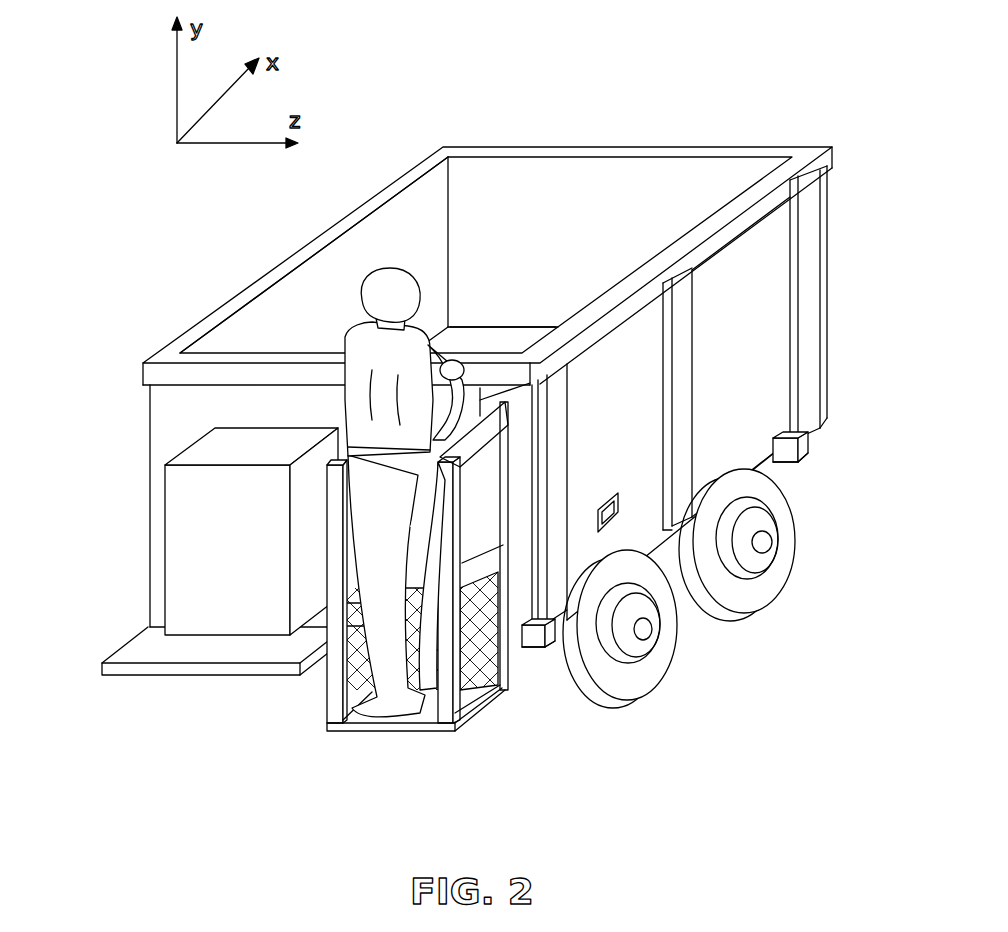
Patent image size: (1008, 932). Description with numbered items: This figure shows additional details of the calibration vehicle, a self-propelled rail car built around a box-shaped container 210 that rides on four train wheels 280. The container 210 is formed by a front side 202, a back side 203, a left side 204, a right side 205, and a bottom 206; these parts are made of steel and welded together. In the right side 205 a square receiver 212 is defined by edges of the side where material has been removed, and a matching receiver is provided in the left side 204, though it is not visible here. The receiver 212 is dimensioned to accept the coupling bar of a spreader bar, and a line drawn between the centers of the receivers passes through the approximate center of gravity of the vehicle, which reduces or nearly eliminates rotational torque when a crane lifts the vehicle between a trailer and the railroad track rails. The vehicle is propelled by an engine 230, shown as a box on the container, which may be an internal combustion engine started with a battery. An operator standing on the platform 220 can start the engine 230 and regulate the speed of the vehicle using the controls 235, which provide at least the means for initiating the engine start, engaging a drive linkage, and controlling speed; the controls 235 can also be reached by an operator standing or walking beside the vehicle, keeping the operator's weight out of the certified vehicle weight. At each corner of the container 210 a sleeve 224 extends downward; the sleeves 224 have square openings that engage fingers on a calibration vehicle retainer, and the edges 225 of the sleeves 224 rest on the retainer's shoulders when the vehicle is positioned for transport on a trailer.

The front side 202 is at (707, 147).
The back side 203 is at (262, 395).
The left side 204 is at (313, 280).
The right side 205 is at (765, 300).
The bottom 206 is at (494, 355).
The container 210 is at (759, 362).
The receiver 212 is at (618, 521).
The platform 220 is at (408, 717).
The sleeve 224 is at (810, 452).
The edge 225 is at (793, 464).
The engine 230 is at (227, 450).
The controls 235 is at (538, 362).
The train wheel 280 is at (795, 543).